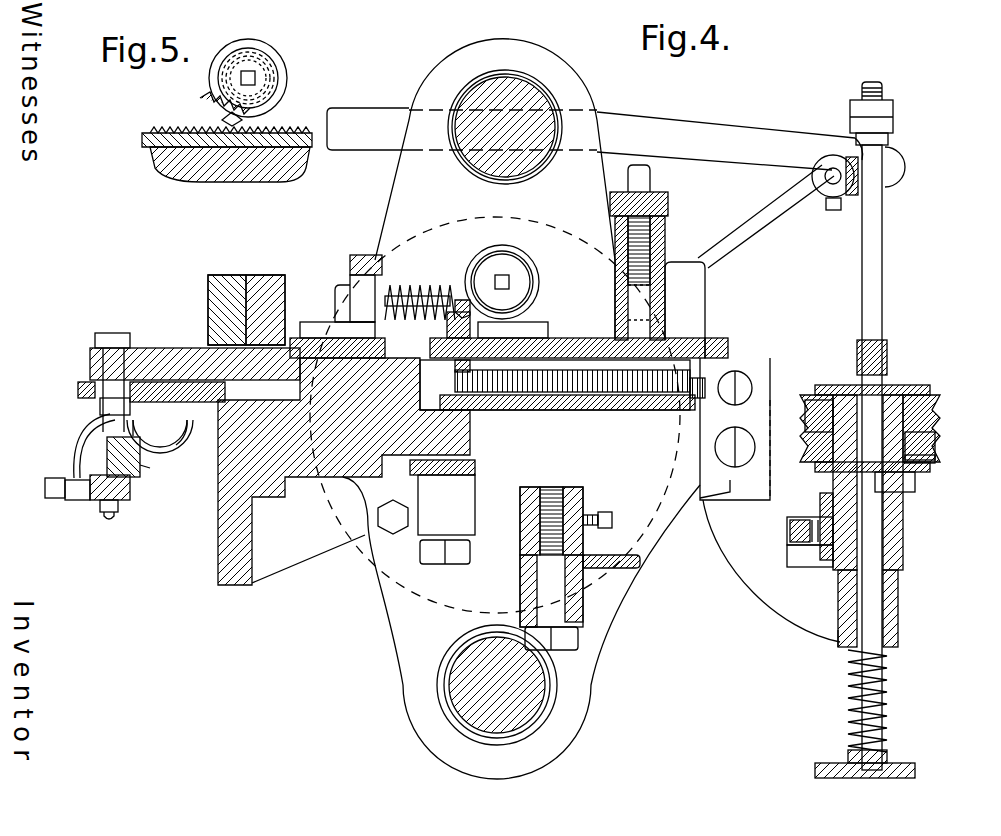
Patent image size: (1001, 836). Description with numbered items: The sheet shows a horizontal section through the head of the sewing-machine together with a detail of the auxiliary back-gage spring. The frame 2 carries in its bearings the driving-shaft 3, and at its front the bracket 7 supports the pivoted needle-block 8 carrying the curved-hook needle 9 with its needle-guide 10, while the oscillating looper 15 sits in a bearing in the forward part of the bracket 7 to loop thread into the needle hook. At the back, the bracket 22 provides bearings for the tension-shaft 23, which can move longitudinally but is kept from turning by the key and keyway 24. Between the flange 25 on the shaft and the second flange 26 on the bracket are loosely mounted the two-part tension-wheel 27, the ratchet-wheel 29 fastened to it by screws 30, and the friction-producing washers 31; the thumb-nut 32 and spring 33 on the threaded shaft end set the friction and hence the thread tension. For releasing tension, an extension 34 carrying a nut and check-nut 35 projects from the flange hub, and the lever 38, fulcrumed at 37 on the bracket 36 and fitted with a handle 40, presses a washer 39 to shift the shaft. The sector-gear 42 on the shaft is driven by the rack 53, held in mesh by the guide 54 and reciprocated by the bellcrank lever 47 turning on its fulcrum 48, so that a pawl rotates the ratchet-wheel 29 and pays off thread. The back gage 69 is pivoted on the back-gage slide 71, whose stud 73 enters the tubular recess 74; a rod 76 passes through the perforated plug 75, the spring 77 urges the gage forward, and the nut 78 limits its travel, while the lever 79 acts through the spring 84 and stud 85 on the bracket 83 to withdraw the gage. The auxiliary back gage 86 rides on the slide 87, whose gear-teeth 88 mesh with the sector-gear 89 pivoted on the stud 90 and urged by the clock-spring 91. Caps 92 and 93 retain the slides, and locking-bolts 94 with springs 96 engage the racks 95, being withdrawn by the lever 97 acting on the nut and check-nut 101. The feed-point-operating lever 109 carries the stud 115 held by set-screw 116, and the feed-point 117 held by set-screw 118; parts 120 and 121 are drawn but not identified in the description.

In FIG. 5, the frame 2 is at (238, 182).
In FIG. 4, the frame 2 is at (580, 240).
In FIG. 4, the driving-shaft 3 is at (497, 685).
In FIG. 4, the bracket 7 is at (192, 348).
In FIG. 4, the needle-block 8 is at (186, 404).
In FIG. 4, the curved-hook needle 9 is at (100, 405).
In FIG. 4, the needle-guide 10 is at (158, 435).
In FIG. 4, the oscillating looper 15 is at (78, 388).
In FIG. 4, the bracket 22 is at (800, 573).
In FIG. 4, the tension-shaft 23 is at (868, 482).
In FIG. 4, the key and keyway 24 is at (838, 624).
In FIG. 4, the flange 25 is at (905, 385).
In FIG. 4, the second flange 26 is at (912, 478).
In FIG. 4, the tension-wheel 27 is at (940, 400).
In FIG. 4, the ratchet-wheel 29 is at (935, 460).
In FIG. 4, the screws 30 is at (835, 382).
In FIG. 4, the friction-producing washers 31 is at (925, 386).
In FIG. 4, the thumb-nut 32 is at (914, 752).
In FIG. 4, the spring 33 is at (887, 688).
In FIG. 4, the extension 34 is at (882, 262).
In FIG. 4, the nut and check-nut 35 is at (893, 117).
In FIG. 4, the bracket 36 is at (775, 216).
In FIG. 4, the fulcrum 37 is at (828, 200).
In FIG. 4, the lever 38 is at (905, 166).
In FIG. 4, the washer 39 is at (888, 139).
In FIG. 4, the handle 40 is at (342, 128).
In FIG. 4, the sector-gear 42 is at (820, 500).
In FIG. 4, the bellcrank lever 47 is at (640, 562).
In FIG. 4, the fulcrum 48 is at (566, 568).
In FIG. 4, the rack 53 is at (787, 530).
In FIG. 4, the guide 54 is at (787, 555).
In FIG. 4, the back gage 69 is at (170, 440).
In FIG. 4, the back-gage slide 71 is at (602, 340).
In FIG. 4, the stud 73 is at (555, 385).
In FIG. 4, the tubular recess 74 is at (558, 400).
In FIG. 4, the perforated plug 75 is at (726, 394).
In FIG. 4, the rod 76 is at (742, 372).
In FIG. 4, the spring 77 is at (605, 412).
In FIG. 4, the nut 78 is at (720, 372).
In FIG. 4, the lever 79 is at (350, 262).
In FIG. 4, the bracket 83 is at (447, 328).
In FIG. 4, the spring 84 is at (440, 285).
In FIG. 4, the stud 85 is at (420, 296).
In FIG. 4, the auxiliary back gage 86 is at (184, 455).
In FIG. 5, the slide 87 is at (142, 137).
In FIG. 5, the gear-teeth 88 is at (290, 127).
In FIG. 5, the sector-gear 89 is at (200, 96).
In FIG. 4, the sector-gear 89 is at (470, 298).
In FIG. 5, the stud 90 is at (256, 78).
In FIG. 4, the stud 90 is at (512, 280).
In FIG. 5, the clock-spring 91 is at (232, 52).
In FIG. 4, the clock-spring 91 is at (503, 262).
In FIG. 4, the cap 92 is at (335, 312).
In FIG. 4, the cap 93 is at (700, 300).
In FIG. 4, the locking-bolts 94 is at (640, 278).
In FIG. 4, the racks 95 is at (706, 340).
In FIG. 4, the springs 96 is at (628, 262).
In FIG. 4, the lever 97 is at (668, 206).
In FIG. 4, the nut and check-nut 101 is at (650, 176).
In FIG. 4, the feed-point-operating lever 109 is at (130, 490).
In FIG. 4, the stud 115 is at (72, 502).
In FIG. 4, the set-screw 116 is at (110, 522).
In FIG. 4, the feed-point 117 is at (73, 432).
In FIG. 4, the set-screw 118 is at (45, 486).
In FIG. 4, the pin 120 is at (156, 475).
In FIG. 4, the bracket 121 is at (107, 450).